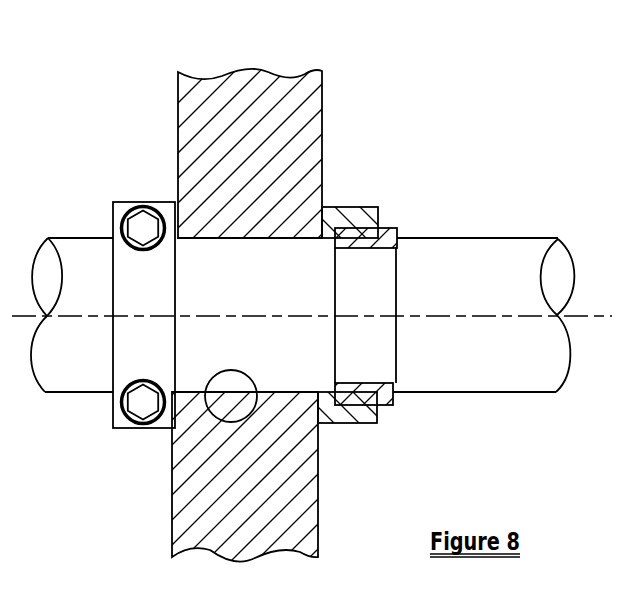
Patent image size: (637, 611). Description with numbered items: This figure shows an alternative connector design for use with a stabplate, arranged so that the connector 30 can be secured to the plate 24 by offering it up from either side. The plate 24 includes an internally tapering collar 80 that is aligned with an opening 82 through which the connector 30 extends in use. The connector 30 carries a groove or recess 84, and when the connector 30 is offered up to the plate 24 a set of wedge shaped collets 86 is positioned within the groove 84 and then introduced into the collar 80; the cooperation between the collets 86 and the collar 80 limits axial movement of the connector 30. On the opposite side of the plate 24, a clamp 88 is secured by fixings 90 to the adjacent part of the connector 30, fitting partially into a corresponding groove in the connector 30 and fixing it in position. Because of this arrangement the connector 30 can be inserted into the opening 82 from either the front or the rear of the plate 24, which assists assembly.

The plate 24 is at (302, 137).
The connector 30 is at (483, 270).
The collar 80 is at (353, 425).
The opening 82 is at (208, 423).
The groove 84 is at (385, 356).
The collets 86 is at (389, 230).
The clamp 88 is at (116, 438).
The fixings 90 is at (120, 400).